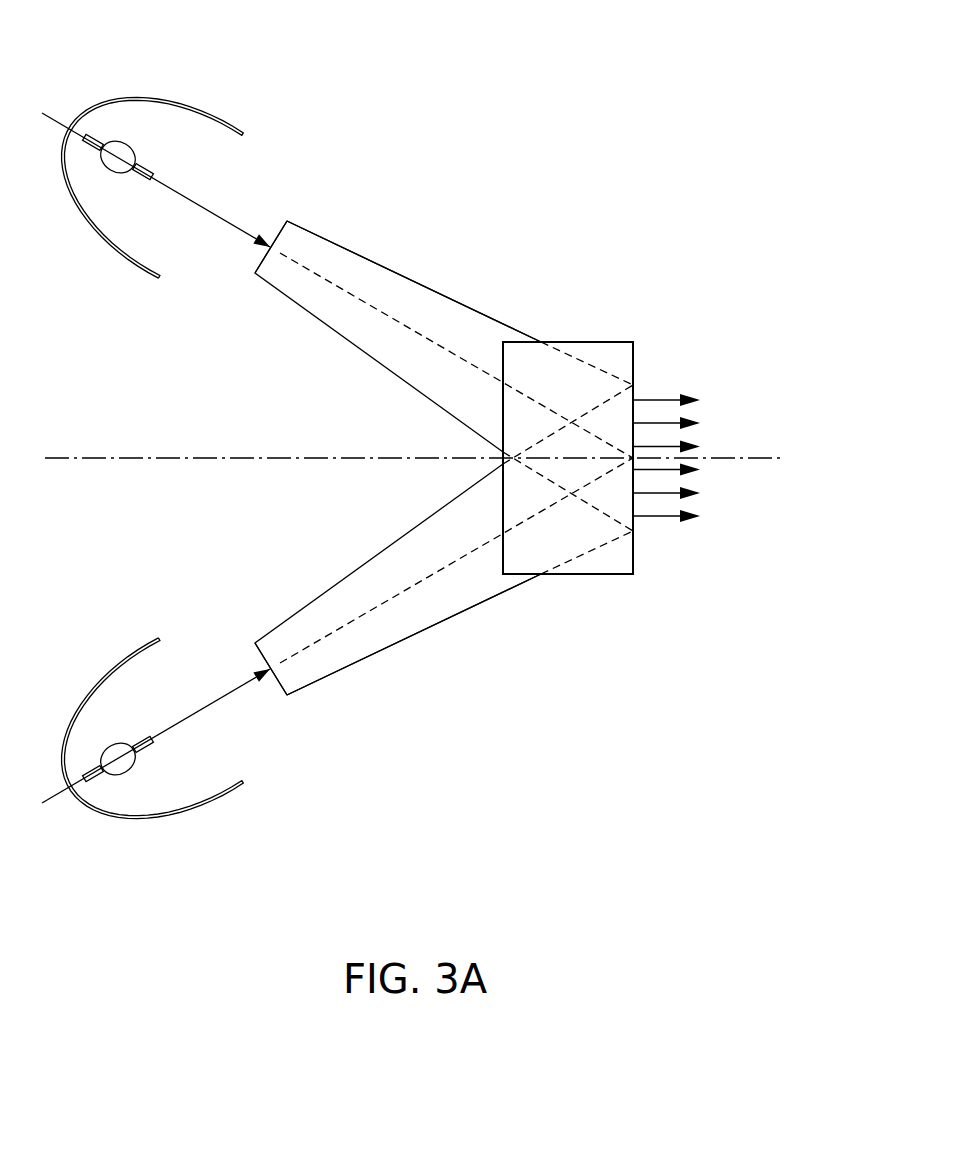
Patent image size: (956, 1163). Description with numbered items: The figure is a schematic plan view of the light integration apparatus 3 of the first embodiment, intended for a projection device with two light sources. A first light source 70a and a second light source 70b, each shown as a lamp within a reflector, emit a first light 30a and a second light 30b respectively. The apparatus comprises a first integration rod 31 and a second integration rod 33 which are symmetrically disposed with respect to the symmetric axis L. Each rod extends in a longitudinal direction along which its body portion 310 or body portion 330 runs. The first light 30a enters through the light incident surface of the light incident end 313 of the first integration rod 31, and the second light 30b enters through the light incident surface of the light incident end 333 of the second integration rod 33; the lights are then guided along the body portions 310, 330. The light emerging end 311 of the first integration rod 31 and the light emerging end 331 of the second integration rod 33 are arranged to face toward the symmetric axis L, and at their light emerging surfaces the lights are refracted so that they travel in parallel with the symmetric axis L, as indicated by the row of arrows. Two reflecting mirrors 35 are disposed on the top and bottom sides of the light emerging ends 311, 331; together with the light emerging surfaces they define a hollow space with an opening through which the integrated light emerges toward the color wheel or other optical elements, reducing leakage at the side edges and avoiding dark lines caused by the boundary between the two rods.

The light integration apparatus 3 is at (566, 154).
The symmetric axis L is at (405, 460).
The first light source 70a is at (134, 96).
The second light source 70b is at (145, 818).
The first light 30a is at (213, 218).
The second light 30b is at (213, 698).
The first integration rod 31 is at (405, 271).
The light incident end 313 is at (278, 223).
The body portion 310 is at (483, 341).
The second integration rod 33 is at (434, 631).
The light incident end 333 is at (268, 692).
The body portion 330 is at (483, 541).
The reflecting mirror 35 is at (605, 348).
The light emerging end 311 is at (622, 397).
The light emerging end 331 is at (628, 527).